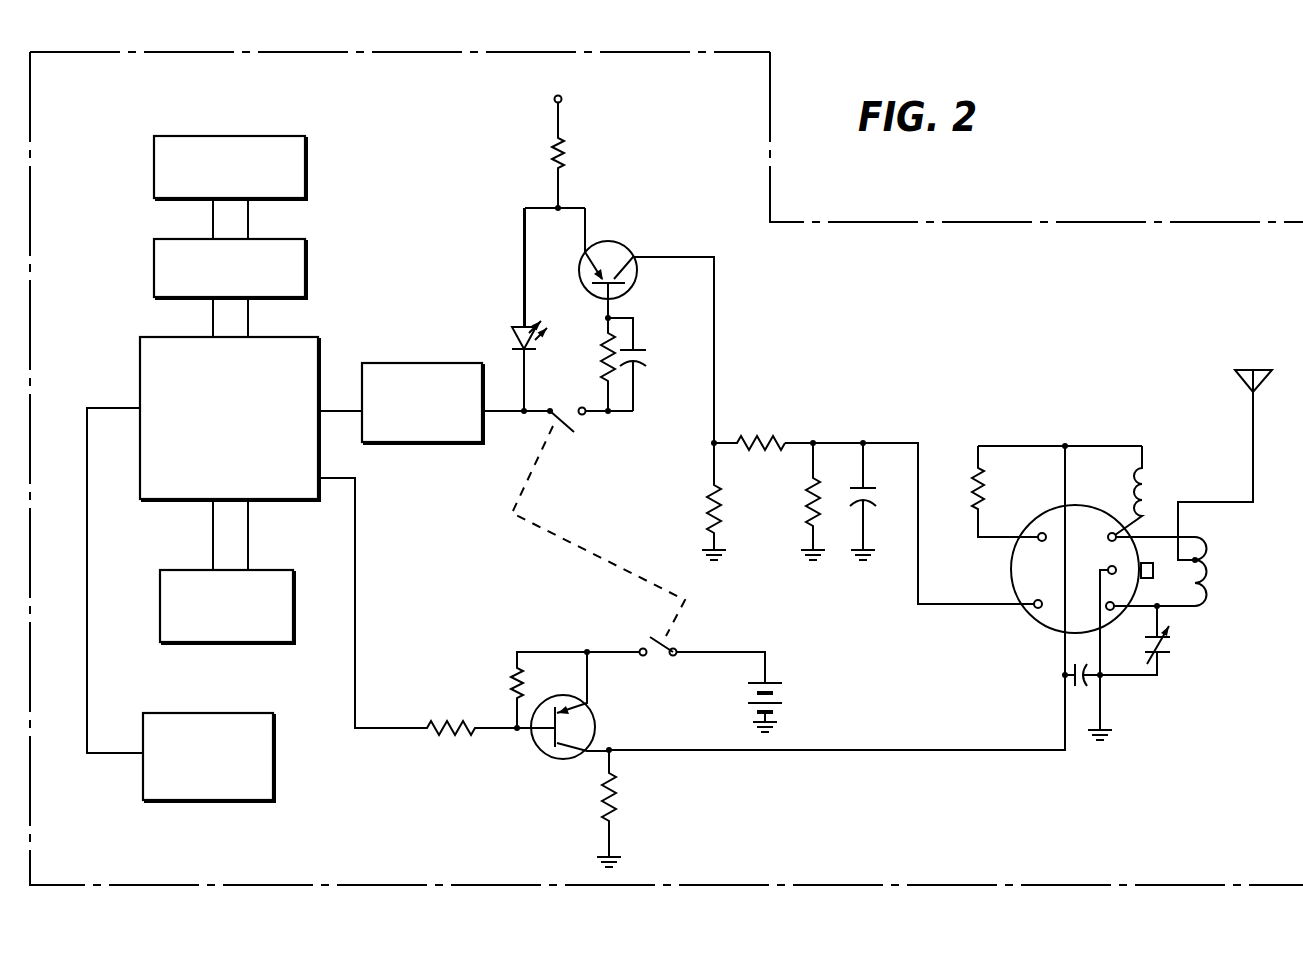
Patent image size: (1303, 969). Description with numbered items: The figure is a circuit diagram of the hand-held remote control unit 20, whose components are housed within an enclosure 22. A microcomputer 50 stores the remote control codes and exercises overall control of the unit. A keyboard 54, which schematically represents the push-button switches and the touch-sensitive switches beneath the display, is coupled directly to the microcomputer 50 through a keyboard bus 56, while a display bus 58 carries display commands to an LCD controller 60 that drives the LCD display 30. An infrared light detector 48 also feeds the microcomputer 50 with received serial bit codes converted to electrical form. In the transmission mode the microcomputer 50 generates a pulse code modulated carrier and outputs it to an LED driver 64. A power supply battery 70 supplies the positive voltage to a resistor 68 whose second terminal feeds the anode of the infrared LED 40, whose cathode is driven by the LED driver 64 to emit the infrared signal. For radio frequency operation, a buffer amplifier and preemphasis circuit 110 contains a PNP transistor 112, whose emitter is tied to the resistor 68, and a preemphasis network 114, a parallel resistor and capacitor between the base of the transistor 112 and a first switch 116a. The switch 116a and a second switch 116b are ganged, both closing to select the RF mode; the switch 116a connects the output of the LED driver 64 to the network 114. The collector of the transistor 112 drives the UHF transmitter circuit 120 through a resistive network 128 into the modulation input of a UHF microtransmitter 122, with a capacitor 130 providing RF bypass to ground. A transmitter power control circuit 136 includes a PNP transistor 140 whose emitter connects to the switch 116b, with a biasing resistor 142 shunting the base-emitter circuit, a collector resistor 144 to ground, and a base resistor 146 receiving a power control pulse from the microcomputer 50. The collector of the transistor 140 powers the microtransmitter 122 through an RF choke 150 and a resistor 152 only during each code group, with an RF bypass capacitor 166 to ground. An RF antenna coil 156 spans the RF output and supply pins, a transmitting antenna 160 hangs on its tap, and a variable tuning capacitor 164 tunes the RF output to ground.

The hand-held remote control unit 20 is at (837, 210).
The enclosure 22 is at (483, 52).
The LCD display 30 is at (306, 163).
The infrared LED light emitter 40 is at (503, 330).
The infrared light detector 48 is at (240, 801).
The microcomputer 50 is at (230, 419).
The keyboard 54 is at (228, 643).
The keyboard bus 56 is at (248, 523).
The display bus 58 is at (248, 303).
The LCD controller 60 is at (154, 258).
The LED driver 64 is at (420, 443).
The resistor 68 is at (566, 155).
The power supply battery 70 is at (808, 692).
The buffer amplifier and preemphasis circuit 110 is at (695, 298).
The PNP transistor 112 is at (605, 243).
The preemphasis network 114 is at (640, 372).
The first switch 116a is at (575, 433).
The second switch 116b is at (671, 641).
The UHF transmitter circuit 120 is at (1060, 442).
The UHF microtransmitter 122 is at (1040, 624).
The resistive network 128 is at (780, 496).
The capacitor 130 is at (870, 456).
The transmitter power control circuit 136 is at (534, 811).
The PNP transistor 140 is at (595, 712).
The biasing resistor 142 is at (519, 675).
The collector resistor 144 is at (616, 795).
The base resistor 146 is at (455, 732).
The RF choke 150 is at (1158, 459).
The resistor 152 is at (986, 471).
The RF antenna coil 156 is at (1207, 571).
The transmitting antenna 160 is at (1236, 380).
The variable tuning capacitor 164 is at (1171, 649).
The RF bypass capacitor 166 is at (1072, 687).